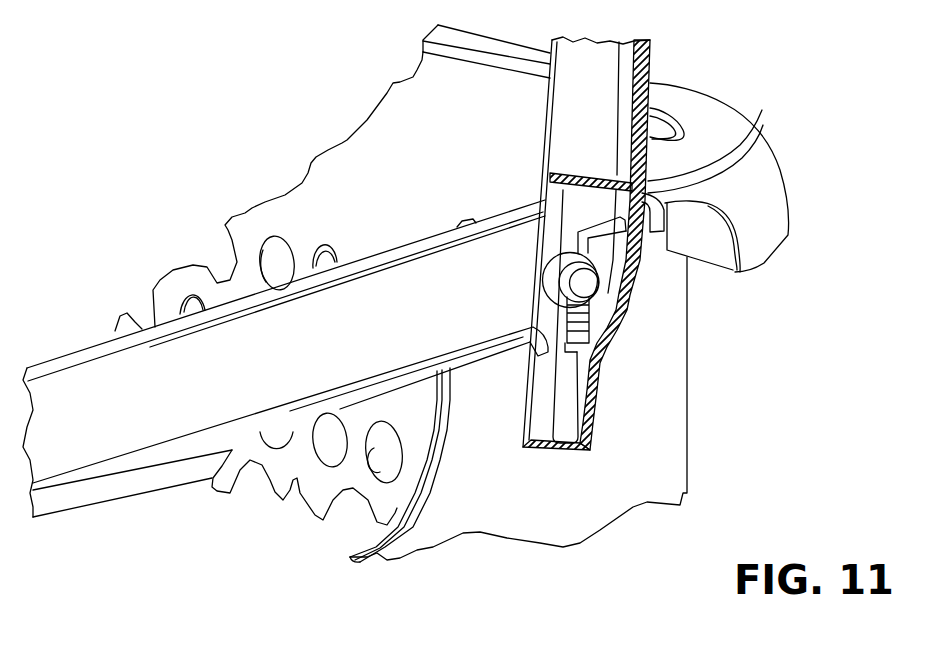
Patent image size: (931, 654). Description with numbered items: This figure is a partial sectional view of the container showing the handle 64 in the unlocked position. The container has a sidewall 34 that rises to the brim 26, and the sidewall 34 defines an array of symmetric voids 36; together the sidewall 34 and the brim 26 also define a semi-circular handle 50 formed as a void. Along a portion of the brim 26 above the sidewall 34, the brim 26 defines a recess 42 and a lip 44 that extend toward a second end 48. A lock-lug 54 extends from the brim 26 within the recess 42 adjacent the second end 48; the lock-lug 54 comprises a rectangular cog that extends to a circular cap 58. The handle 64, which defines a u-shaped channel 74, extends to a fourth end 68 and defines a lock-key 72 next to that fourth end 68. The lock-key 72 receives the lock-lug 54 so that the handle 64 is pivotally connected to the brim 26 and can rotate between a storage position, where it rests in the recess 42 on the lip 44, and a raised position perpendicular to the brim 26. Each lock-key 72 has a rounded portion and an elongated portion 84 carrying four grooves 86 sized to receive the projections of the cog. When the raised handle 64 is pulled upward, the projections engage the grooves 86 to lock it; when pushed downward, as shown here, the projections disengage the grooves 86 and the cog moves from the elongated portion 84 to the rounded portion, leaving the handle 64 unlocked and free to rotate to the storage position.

The brim 26 is at (713, 122).
The sidewall 34 is at (549, 523).
The voids 36 is at (376, 454).
The recess 42 is at (77, 395).
The lip 44 is at (143, 462).
The second end 48 is at (650, 222).
The handles 50 is at (390, 517).
The lock-lug 54 is at (586, 293).
The cap 58 is at (596, 277).
The handle 64 is at (651, 72).
The fourth end 68 is at (596, 420).
The lock-key 72 is at (565, 352).
The u-shaped channel 74 is at (632, 92).
The elongated portion 84 is at (600, 364).
The grooves 86 is at (555, 312).